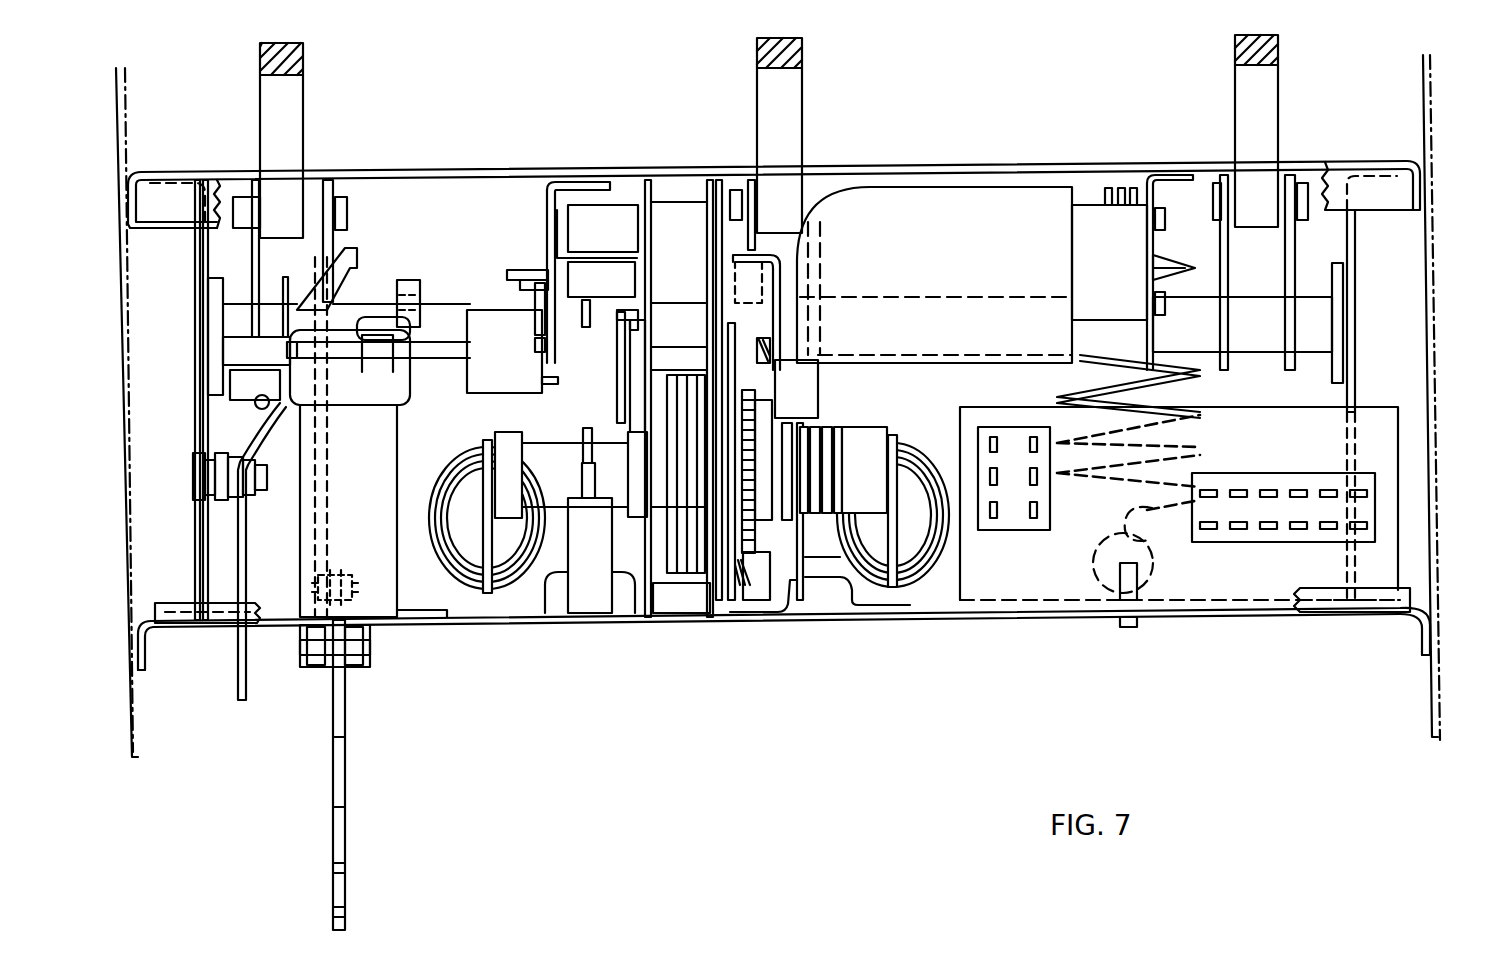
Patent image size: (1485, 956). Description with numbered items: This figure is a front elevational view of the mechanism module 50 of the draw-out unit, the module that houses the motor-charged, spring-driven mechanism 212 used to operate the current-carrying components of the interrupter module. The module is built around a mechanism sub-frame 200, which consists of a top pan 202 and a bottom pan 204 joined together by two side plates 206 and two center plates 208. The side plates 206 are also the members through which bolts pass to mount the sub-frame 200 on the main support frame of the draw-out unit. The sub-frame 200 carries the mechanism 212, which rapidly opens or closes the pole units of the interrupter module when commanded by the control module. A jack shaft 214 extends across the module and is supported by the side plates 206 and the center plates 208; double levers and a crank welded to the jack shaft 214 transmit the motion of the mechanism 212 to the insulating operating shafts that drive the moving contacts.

The mechanism module 50 is at (744, 709).
The mechanism sub-frame 200 is at (779, 396).
The top pan 202 is at (1005, 163).
The bottom pan 204 is at (823, 617).
The side plates 206 is at (122, 432).
The center plates 208 is at (718, 616).
The motor-charged spring-driven mechanism 212 is at (451, 434).
The jack shaft 214 is at (1197, 293).